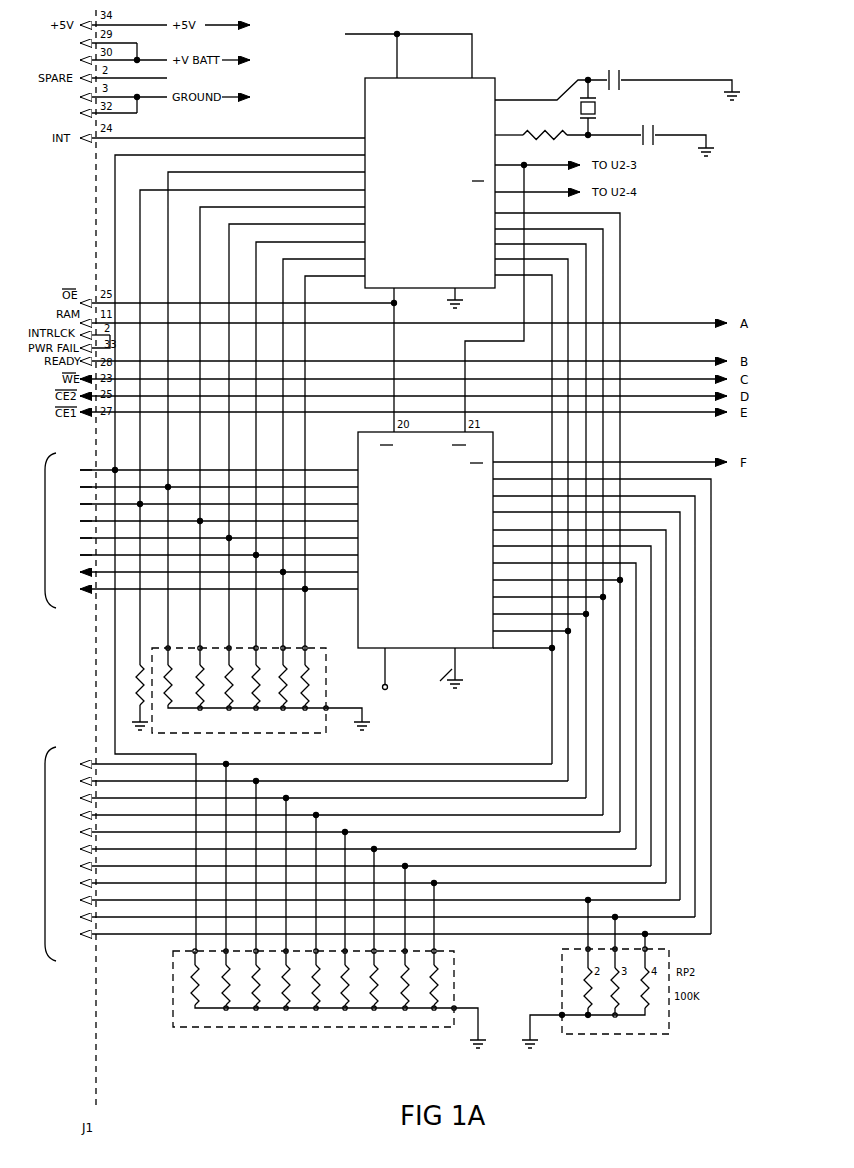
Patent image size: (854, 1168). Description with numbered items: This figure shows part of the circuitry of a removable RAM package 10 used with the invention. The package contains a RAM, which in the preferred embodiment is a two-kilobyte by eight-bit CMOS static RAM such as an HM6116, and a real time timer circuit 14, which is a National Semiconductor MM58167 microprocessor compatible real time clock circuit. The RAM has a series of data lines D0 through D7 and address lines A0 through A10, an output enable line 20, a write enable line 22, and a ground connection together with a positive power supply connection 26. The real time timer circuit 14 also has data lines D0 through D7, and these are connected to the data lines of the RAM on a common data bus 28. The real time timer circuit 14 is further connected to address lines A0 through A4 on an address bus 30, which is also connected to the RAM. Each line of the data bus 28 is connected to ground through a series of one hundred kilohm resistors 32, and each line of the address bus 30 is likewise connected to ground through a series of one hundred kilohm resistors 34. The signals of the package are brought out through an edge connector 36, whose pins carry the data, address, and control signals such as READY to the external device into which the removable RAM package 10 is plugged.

The removable RAM package 10 is at (553, 77).
The real time timer circuit 14 is at (497, 78).
The output enable line 20 is at (395, 337).
The write enable line 22 is at (464, 350).
The positive power supply connection 26 is at (388, 677).
The common data bus 28 is at (201, 546).
The address bus 30 is at (378, 831).
The 100K resistors 32 is at (325, 644).
The 100K resistors 34 is at (338, 1031).
The edge connector 36 is at (425, 514).